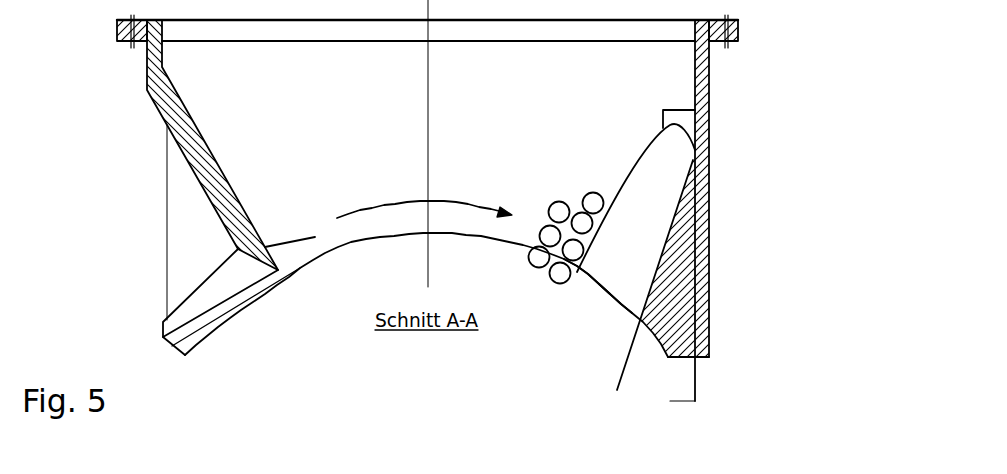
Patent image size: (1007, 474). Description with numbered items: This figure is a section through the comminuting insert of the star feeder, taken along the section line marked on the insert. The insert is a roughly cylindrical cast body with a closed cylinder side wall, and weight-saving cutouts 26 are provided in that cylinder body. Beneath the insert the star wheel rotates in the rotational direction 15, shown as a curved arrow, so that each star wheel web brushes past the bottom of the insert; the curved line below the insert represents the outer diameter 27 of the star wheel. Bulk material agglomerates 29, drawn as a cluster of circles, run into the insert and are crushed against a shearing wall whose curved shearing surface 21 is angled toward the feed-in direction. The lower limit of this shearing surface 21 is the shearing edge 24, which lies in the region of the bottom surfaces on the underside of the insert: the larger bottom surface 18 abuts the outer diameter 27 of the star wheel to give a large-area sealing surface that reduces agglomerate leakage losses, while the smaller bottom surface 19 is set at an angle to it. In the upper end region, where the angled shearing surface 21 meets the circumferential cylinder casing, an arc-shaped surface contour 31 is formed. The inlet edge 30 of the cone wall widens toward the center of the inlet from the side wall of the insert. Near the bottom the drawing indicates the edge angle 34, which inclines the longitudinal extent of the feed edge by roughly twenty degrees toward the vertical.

The rotational direction 15 is at (450, 200).
The larger bottom surface 18 is at (605, 361).
The smaller bottom surface 19 is at (709, 357).
The shearing surface 21 is at (638, 228).
The shearing edge 24 is at (595, 273).
The cutouts 26 is at (207, 232).
The outer diameter of the star wheel 27 is at (354, 245).
The bulk material agglomerates 29 is at (553, 279).
The inlet edge 30 is at (315, 237).
The arc-shaped surface contour 31 is at (695, 103).
The edge angle 34 is at (615, 390).